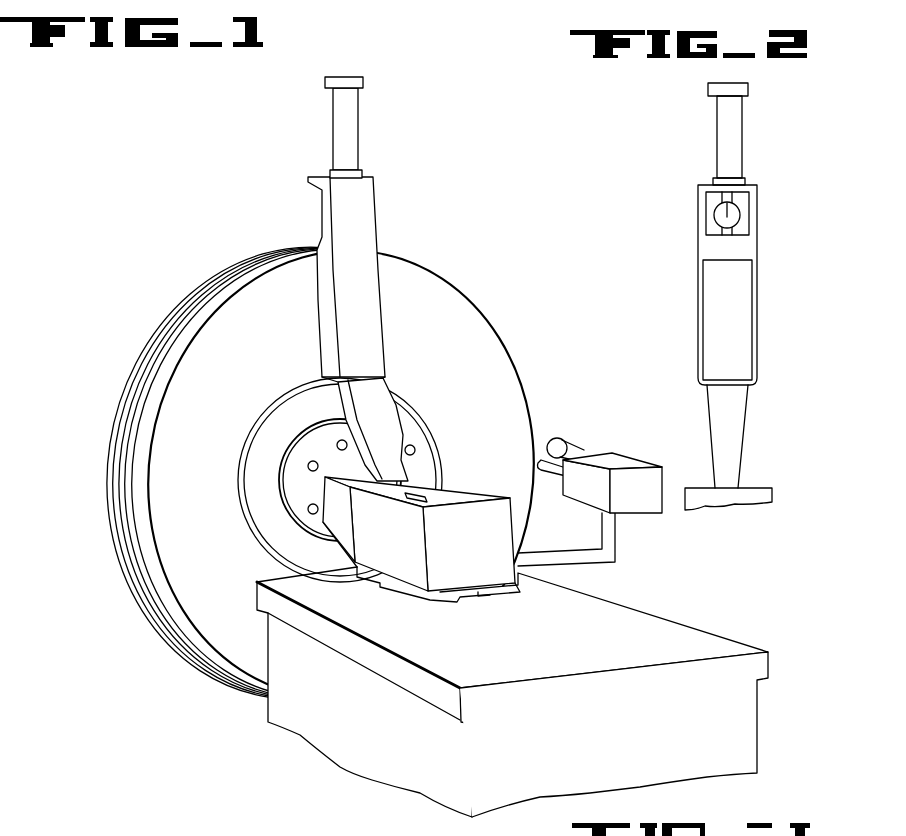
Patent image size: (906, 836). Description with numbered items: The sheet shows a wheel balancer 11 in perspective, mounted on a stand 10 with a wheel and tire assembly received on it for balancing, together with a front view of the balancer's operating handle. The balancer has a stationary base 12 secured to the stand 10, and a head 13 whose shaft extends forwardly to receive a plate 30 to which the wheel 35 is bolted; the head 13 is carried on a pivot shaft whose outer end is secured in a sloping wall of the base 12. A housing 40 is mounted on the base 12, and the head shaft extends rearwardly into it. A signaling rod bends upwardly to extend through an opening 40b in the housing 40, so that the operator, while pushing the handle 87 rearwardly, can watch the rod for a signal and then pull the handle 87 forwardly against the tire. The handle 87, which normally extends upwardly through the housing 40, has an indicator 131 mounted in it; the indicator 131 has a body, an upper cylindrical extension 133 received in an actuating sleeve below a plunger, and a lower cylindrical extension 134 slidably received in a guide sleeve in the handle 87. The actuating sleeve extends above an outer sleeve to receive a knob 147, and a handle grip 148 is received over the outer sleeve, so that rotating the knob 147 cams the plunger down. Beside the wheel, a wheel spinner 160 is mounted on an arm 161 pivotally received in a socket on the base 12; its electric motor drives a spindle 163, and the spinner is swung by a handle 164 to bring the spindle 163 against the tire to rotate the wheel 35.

In FIG. 1, the stand 10 is at (750, 712).
In FIG. 1, the wheel balancer 11 is at (483, 598).
In FIG. 1, the stationary base 12 is at (420, 600).
In FIG. 1, the head 13 is at (343, 528).
In FIG. 1, the plate 30 is at (292, 492).
In FIG. 1, the wheel 35 is at (262, 467).
In FIG. 1, the housing 40 is at (483, 506).
In FIG. 1, the opening in the housing 40b is at (416, 500).
In FIG. 1, the handle 87 is at (372, 212).
In FIG. 2, the handle 87 is at (752, 255).
In FIG. 2, the indicator 131 is at (740, 216).
In FIG. 2, the upper cylindrical extension 133 is at (735, 196).
In FIG. 2, the lower cylindrical extension 134 is at (730, 233).
In FIG. 1, the knob 147 is at (363, 84).
In FIG. 2, the knob 147 is at (748, 90).
In FIG. 1, the handle grip 148 is at (355, 127).
In FIG. 2, the handle grip 148 is at (733, 130).
In FIG. 1, the wheel spinner 160 is at (643, 518).
In FIG. 1, the arm 161 is at (585, 560).
In FIG. 1, the spindle 163 is at (542, 461).
In FIG. 1, the handle 164 is at (576, 448).